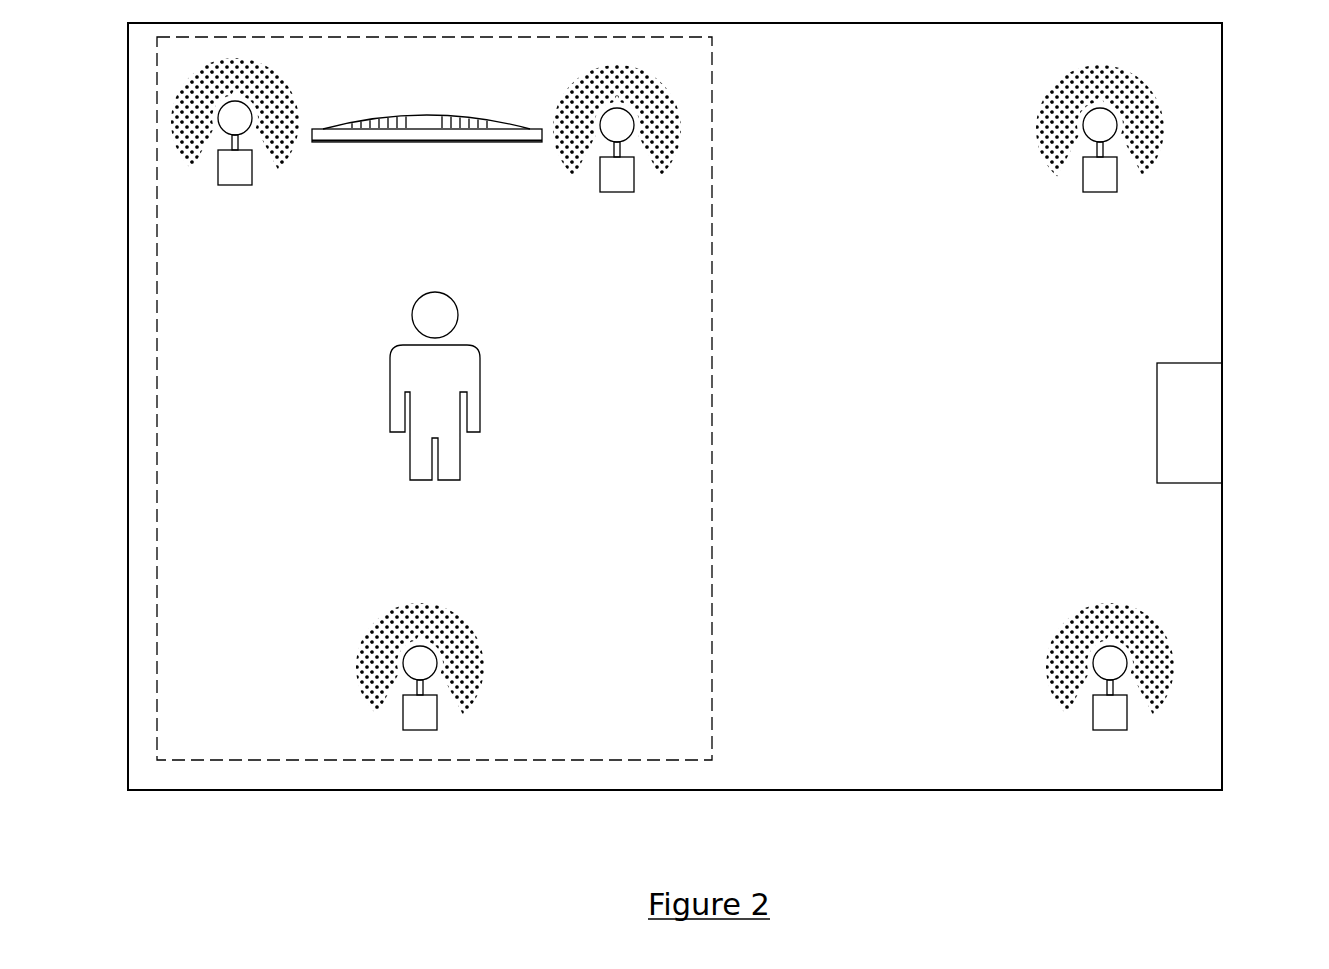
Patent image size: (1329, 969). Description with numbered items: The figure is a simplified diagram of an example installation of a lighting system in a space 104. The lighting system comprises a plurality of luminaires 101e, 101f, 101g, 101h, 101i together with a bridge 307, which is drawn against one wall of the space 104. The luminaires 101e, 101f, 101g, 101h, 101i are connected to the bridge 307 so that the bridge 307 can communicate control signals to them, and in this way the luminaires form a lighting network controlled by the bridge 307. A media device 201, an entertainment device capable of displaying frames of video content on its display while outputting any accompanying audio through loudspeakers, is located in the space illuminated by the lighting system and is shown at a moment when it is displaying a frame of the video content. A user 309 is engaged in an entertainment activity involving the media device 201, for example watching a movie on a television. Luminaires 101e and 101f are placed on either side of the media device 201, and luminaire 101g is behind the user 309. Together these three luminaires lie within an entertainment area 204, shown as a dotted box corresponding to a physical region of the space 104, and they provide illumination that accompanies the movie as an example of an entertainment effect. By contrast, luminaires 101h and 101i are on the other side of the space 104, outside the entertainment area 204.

The space 104 is at (1222, 248).
The entertainment area 204 is at (712, 293).
The media device 201 is at (415, 115).
The bridge 307 is at (1189, 423).
The user 309 is at (480, 397).
The luminaire 101e is at (242, 186).
The luminaire 101f is at (615, 193).
The luminaire 101g is at (437, 722).
The luminaire 101h is at (1105, 193).
The luminaire 101i is at (1095, 728).